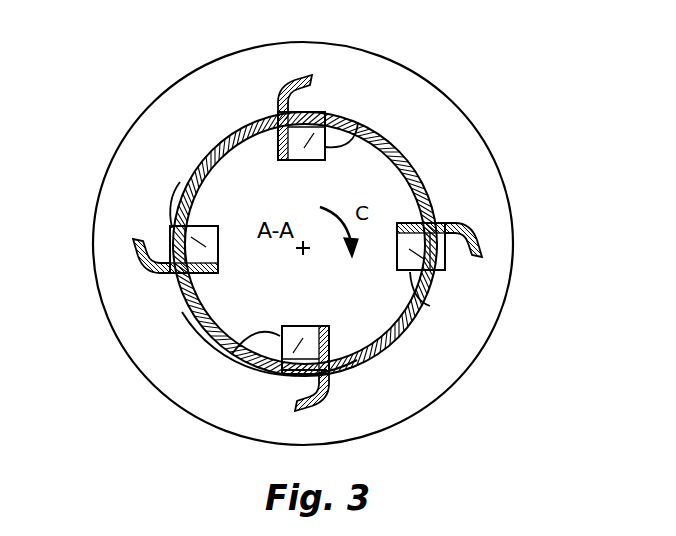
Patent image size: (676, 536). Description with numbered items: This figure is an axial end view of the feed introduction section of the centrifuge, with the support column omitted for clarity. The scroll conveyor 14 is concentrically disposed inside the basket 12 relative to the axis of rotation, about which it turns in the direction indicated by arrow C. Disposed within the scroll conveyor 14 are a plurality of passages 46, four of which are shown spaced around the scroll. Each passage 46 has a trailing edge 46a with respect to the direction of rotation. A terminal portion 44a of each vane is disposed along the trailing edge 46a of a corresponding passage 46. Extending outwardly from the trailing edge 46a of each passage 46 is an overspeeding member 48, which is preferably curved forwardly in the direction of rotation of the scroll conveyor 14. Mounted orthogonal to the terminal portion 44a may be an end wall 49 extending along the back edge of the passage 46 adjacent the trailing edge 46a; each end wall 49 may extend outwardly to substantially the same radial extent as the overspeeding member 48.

The basket 12 is at (507, 296).
The scroll conveyor 14 is at (435, 187).
The terminal portion 44a is at (182, 312).
The passage 46 is at (316, 111).
The trailing edge 46a is at (288, 373).
The overspeeding member 48 is at (294, 78).
The end wall 49 is at (370, 118).